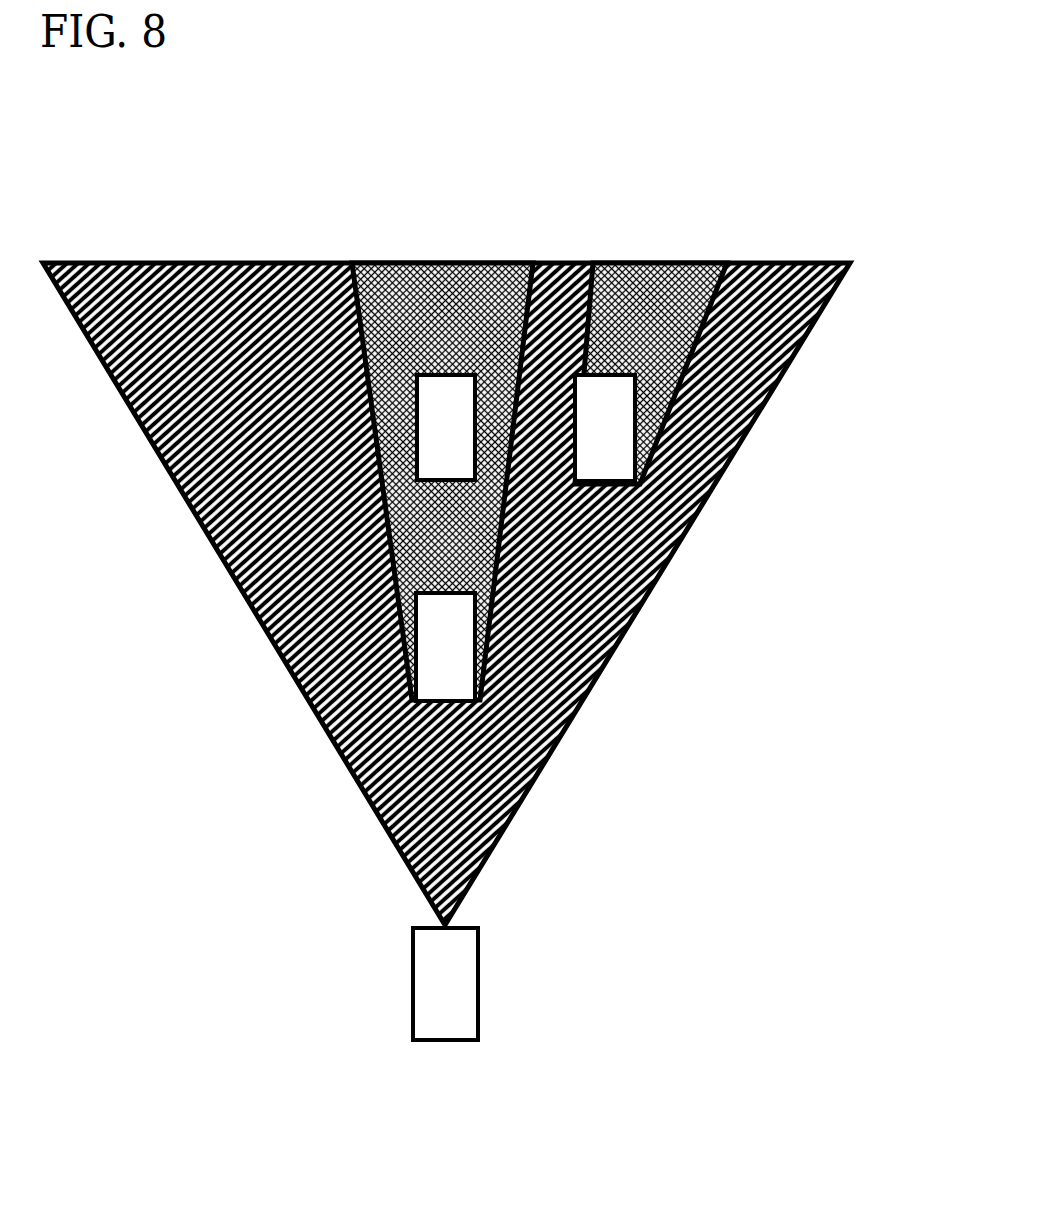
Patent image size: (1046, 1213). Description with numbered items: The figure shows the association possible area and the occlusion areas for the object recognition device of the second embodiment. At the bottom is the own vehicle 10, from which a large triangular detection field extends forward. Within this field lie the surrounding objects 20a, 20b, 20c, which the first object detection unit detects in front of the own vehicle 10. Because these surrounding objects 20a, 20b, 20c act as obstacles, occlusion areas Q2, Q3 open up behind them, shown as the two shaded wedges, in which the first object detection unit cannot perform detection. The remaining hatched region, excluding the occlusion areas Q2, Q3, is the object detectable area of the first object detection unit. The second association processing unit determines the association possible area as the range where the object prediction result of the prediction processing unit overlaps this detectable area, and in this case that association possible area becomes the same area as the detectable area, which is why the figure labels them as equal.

The occlusion area Q2 is at (450, 292).
The occlusion area Q3 is at (648, 292).
The surrounding object 20a is at (613, 457).
The surrounding object 20b is at (445, 455).
The surrounding object 20c is at (448, 652).
The own vehicle 10 is at (478, 977).